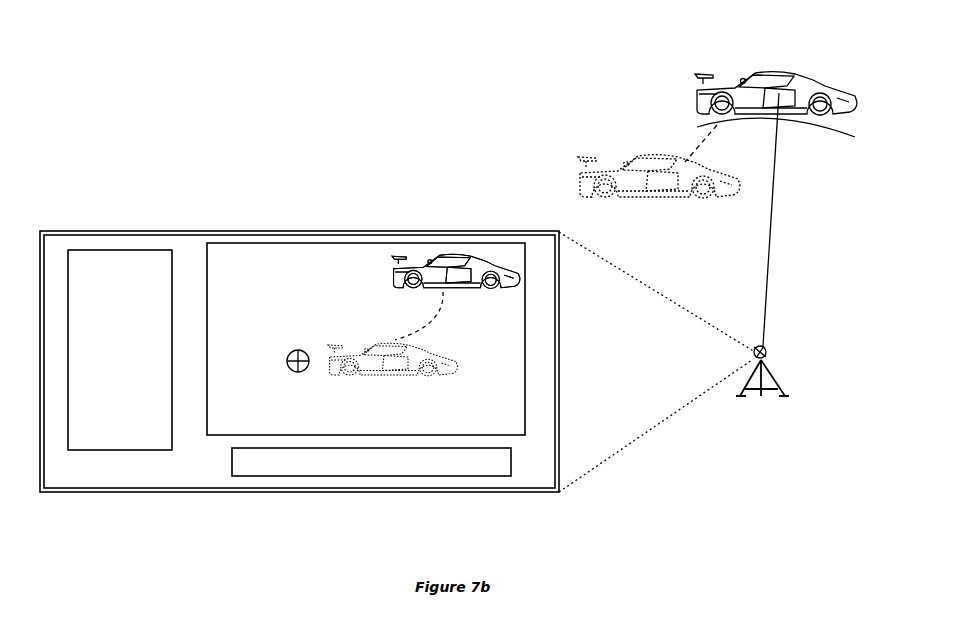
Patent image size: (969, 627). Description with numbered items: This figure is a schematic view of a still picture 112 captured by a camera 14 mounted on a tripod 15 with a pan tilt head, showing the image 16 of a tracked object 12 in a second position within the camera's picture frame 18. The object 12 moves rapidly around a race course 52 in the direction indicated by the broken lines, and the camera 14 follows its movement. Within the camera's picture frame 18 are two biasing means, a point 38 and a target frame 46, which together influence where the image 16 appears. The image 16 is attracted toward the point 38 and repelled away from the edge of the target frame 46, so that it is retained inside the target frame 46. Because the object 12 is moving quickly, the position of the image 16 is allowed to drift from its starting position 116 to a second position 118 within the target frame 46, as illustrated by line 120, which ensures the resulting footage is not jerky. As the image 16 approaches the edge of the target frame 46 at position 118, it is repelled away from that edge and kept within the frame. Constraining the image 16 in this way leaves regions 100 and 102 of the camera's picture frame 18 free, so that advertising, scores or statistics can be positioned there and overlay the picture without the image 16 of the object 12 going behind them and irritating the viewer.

The still picture 112 is at (172, 192).
The camera's picture frame 18 is at (258, 231).
The region 100 is at (128, 357).
The region 102 is at (364, 466).
The target frame 46 is at (505, 243).
The image 16 is at (392, 278).
The position 118 is at (464, 300).
The line 120 is at (416, 320).
The position 116 is at (377, 384).
The point 38 is at (287, 361).
The moving object 12 is at (773, 70).
The race course 52 is at (833, 140).
The camera 14 is at (768, 352).
The tripod 15 is at (779, 382).